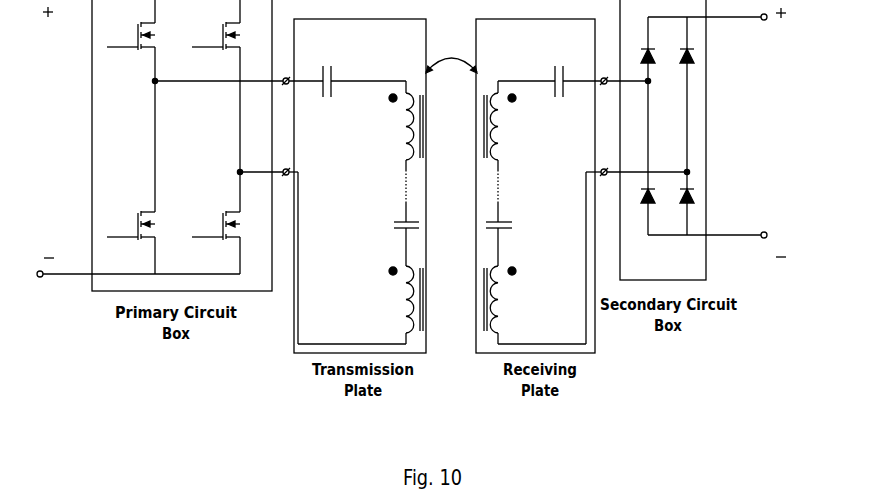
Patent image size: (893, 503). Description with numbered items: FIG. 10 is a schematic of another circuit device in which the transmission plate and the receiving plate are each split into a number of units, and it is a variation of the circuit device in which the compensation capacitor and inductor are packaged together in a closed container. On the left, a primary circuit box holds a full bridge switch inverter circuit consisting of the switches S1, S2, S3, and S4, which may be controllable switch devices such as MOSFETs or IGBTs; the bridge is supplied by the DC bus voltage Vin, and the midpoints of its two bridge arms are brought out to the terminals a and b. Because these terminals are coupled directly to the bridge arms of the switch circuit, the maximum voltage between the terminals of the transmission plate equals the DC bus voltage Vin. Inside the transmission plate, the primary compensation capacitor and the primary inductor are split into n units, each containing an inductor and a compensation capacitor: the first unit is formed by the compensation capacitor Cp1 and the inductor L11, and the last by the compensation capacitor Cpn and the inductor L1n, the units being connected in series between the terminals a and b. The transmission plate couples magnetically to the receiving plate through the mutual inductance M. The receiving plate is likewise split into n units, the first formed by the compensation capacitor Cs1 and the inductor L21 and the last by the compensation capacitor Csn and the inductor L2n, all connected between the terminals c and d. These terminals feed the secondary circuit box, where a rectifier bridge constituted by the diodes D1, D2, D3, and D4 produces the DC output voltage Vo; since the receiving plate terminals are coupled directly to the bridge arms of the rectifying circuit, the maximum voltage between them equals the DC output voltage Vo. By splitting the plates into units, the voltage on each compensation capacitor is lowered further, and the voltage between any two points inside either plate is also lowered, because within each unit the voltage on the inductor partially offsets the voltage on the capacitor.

The switch S1 is at (144, 27).
The switch S2 is at (229, 27).
The switch S3 is at (145, 220).
The switch S4 is at (229, 220).
The DC bus voltage Vin is at (52, 142).
The primary terminal a is at (284, 72).
The primary terminal b is at (284, 163).
The secondary terminal c is at (602, 72).
The secondary terminal d is at (602, 163).
The primary resonant capacitor Cp1 is at (335, 65).
The primary resonant capacitor Cpn is at (386, 218).
The transmission coil L11 is at (399, 126).
The transmission coil L1n is at (396, 299).
The mutual inductance M is at (451, 55).
The secondary resonant capacitor Cs1 is at (563, 66).
The secondary resonant capacitor Csn is at (513, 216).
The receiving coil L21 is at (508, 126).
The receiving coil L2n is at (508, 299).
The rectifier diode D1 is at (638, 47).
The rectifier diode D2 is at (698, 47).
The rectifier diode D3 is at (638, 208).
The rectifier diode D4 is at (698, 208).
The DC output voltage Vo is at (779, 132).